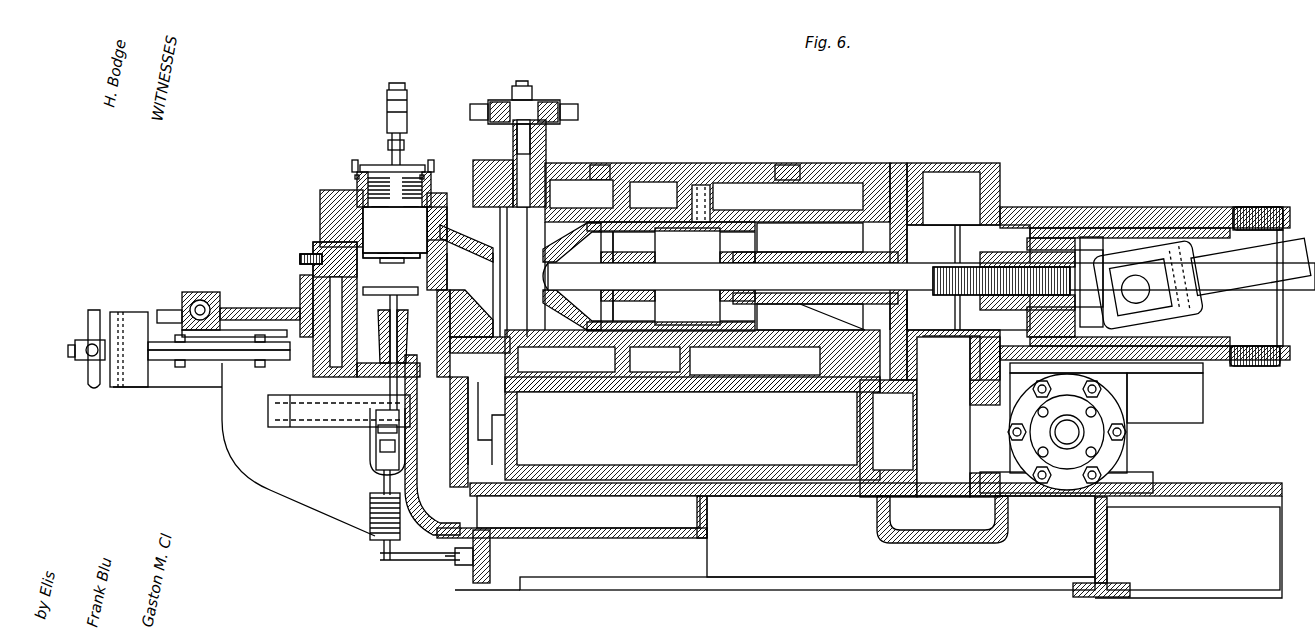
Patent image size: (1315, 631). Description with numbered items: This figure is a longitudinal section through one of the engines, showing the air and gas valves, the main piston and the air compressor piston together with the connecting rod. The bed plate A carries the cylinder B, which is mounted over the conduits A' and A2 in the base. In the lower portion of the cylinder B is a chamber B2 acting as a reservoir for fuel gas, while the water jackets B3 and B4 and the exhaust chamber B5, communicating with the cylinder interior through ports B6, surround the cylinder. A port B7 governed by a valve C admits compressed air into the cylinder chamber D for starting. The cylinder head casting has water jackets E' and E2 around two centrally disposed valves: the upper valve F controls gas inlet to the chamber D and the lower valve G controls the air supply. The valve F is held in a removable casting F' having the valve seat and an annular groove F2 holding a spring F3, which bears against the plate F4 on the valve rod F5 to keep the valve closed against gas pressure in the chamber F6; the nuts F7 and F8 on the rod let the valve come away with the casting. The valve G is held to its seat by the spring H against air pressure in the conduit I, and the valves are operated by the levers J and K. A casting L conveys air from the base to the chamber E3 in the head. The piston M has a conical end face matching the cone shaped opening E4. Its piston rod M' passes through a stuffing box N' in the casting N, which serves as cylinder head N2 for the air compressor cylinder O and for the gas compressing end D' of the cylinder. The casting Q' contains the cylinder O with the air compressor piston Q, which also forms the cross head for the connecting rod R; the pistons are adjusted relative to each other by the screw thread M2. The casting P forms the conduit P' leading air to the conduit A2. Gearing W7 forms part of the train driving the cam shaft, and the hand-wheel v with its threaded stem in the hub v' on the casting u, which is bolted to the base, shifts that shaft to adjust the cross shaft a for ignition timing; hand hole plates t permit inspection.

The bed plate A is at (863, 556).
The conduit A' is at (859, 536).
The conduit A2 is at (942, 519).
The cylinder B is at (858, 176).
The chamber B2 is at (692, 428).
The water jacket B3 is at (610, 188).
The water jacket B4 is at (810, 190).
The exhaust chamber B5 is at (655, 188).
The ports B6 is at (700, 185).
The port B7 is at (597, 176).
The valve C is at (549, 170).
The cylinder chamber D is at (644, 276).
The gas compressing end D' is at (811, 317).
The water jacket E' is at (396, 218).
The water jacket E2 is at (318, 300).
The chamber E3 is at (425, 293).
The cone shaped opening E4 is at (470, 295).
The upper valve F is at (344, 308).
The removable casting F' is at (385, 158).
The annular groove F2 is at (357, 179).
The spring F3 is at (420, 185).
The plate F4 is at (380, 165).
The valve rod F5 is at (363, 191).
The chamber F6 is at (372, 210).
The nut F7 is at (410, 170).
The nut F8 is at (404, 145).
The lower valve G is at (305, 258).
The spring H is at (370, 537).
The conduit I is at (477, 448).
The lever J is at (401, 121).
The lever K is at (376, 431).
The casting L is at (412, 463).
The piston M is at (544, 258).
The piston rod M' is at (931, 276).
The screw thread M2 is at (964, 265).
The casting N is at (905, 258).
The stuffing box N' is at (815, 263).
The cylinder head N2 is at (909, 311).
The air compressor cylinder O is at (968, 277).
The casting P is at (888, 438).
The conduit P' is at (958, 417).
The air compressor piston Q is at (1155, 275).
The casting Q' is at (1145, 272).
The connecting rod R is at (1203, 275).
The gearing W7 is at (1076, 431).
The shaft a is at (198, 298).
The hand hole plates t is at (955, 170).
The casting u is at (244, 449).
The hand-wheel v is at (86, 338).
The internally threaded hub v' is at (200, 337).